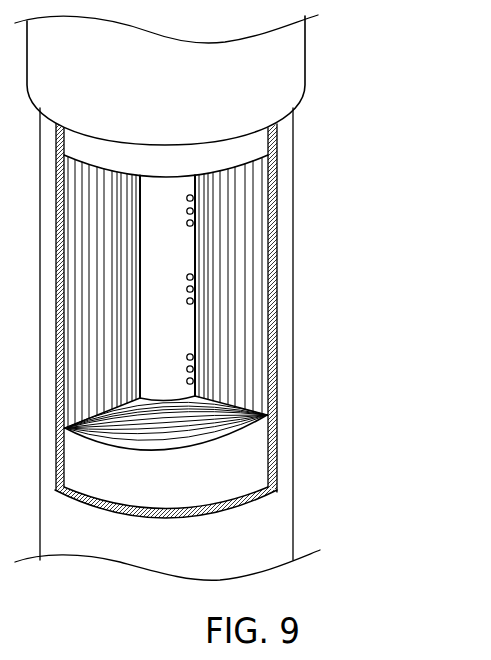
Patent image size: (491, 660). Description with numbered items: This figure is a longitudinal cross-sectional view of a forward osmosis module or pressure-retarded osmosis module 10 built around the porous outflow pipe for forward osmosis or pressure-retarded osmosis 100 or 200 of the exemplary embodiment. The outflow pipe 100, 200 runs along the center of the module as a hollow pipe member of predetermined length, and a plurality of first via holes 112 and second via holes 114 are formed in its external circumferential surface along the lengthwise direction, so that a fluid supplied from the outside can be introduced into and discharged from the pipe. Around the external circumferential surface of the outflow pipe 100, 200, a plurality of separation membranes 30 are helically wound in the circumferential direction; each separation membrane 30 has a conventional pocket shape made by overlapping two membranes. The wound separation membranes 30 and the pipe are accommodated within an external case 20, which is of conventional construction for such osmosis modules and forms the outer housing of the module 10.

The forward osmosis module or pressure-retarded osmosis module 10 is at (245, 297).
The external case 20 is at (288, 320).
The separation membrane 30 is at (242, 388).
The porous outflow pipe for forward osmosis or pressure-retarded osmosis 100 is at (285, 286).
The porous outflow pipe for forward osmosis or pressure-retarded osmosis 200 is at (173, 263).
The first via hole 112 is at (194, 210).
The second via hole 114 is at (193, 357).